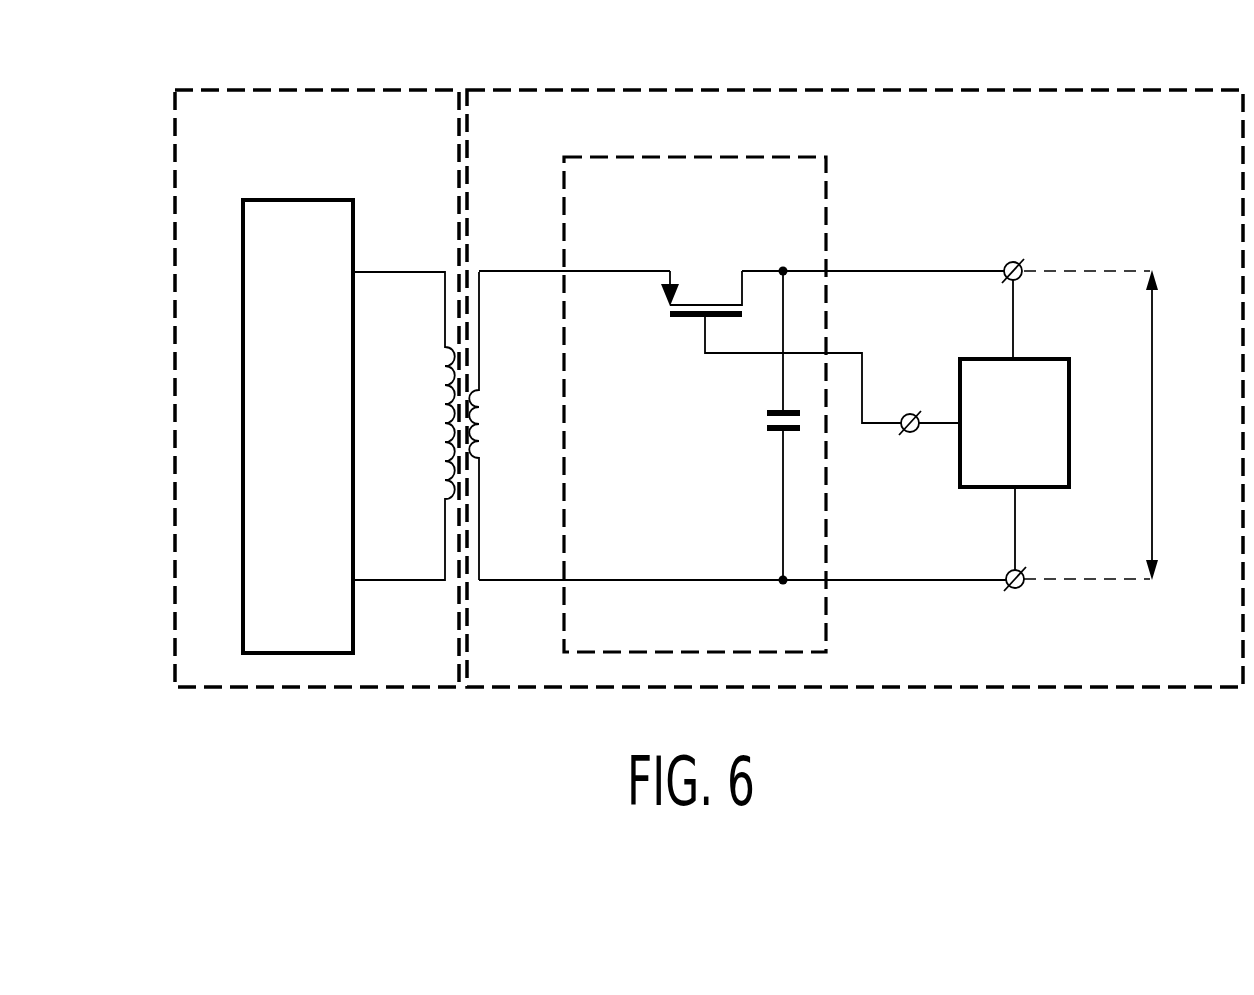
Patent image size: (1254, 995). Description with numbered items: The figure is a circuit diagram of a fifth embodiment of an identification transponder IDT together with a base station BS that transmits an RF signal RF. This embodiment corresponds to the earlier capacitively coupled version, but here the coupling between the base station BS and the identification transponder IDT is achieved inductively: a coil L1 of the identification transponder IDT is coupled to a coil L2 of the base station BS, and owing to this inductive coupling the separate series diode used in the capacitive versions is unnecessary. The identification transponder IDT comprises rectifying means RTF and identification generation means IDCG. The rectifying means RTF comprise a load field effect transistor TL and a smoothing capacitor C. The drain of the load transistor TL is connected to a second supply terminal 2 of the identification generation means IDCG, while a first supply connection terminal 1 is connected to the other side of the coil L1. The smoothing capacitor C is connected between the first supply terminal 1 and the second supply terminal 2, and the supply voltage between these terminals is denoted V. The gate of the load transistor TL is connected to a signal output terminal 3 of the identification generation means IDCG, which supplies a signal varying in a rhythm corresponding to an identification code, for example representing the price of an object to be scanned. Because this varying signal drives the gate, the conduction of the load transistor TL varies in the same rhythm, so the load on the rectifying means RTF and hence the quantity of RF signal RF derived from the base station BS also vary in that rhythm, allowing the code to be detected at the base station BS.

The base station BS is at (316, 88).
The identification transponder IDT is at (853, 88).
The rectifying means RTF is at (826, 183).
The RF signal RF is at (298, 426).
The coil of the base station L2 is at (445, 432).
The coil of the identification transponder L1 is at (482, 428).
The load field effect transistor TL is at (706, 292).
The smoothing capacitor C is at (767, 420).
The first supply connection terminal 1 is at (1017, 593).
The second supply terminal 2 is at (1013, 259).
The signal output terminal 3 is at (911, 413).
The identification generation means IDCG is at (1053, 489).
The supply voltage V is at (1153, 422).